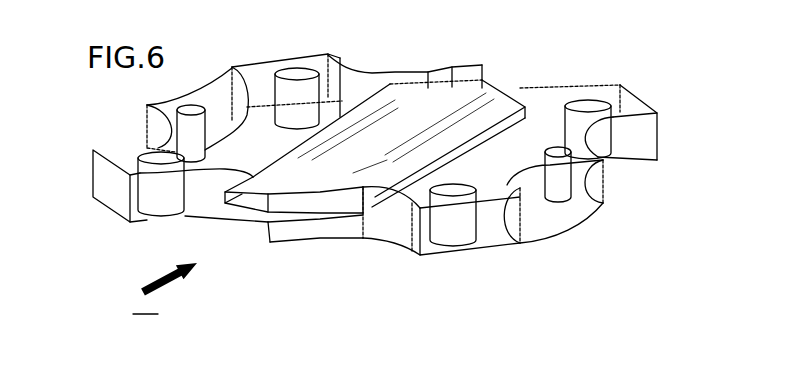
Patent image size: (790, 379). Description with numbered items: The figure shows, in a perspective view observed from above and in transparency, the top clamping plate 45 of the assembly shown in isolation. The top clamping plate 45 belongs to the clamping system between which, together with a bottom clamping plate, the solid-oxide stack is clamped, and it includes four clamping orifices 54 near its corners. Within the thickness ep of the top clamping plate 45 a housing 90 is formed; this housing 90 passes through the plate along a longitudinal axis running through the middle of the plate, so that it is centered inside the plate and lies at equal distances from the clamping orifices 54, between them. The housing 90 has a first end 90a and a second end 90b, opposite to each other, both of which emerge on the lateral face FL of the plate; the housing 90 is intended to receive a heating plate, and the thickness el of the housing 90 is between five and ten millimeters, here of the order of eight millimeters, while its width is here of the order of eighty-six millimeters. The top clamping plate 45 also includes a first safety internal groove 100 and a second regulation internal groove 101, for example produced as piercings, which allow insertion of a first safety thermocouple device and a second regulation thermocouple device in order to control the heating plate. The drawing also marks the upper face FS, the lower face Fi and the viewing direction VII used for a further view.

The top clamping plate 45 is at (355, 128).
The clamping orifices 54 is at (297, 70).
The housing 90 is at (352, 158).
The first end 90a is at (232, 215).
The second end 90b is at (458, 68).
The first safety internal groove 100 is at (490, 90).
The second regulation internal groove 101 is at (487, 103).
The upper face FS is at (356, 78).
The lateral face FL is at (186, 200).
The lower face Fi is at (492, 233).
The thickness ep is at (80, 152).
The thickness of the housing el is at (293, 213).
The view direction VII is at (165, 289).